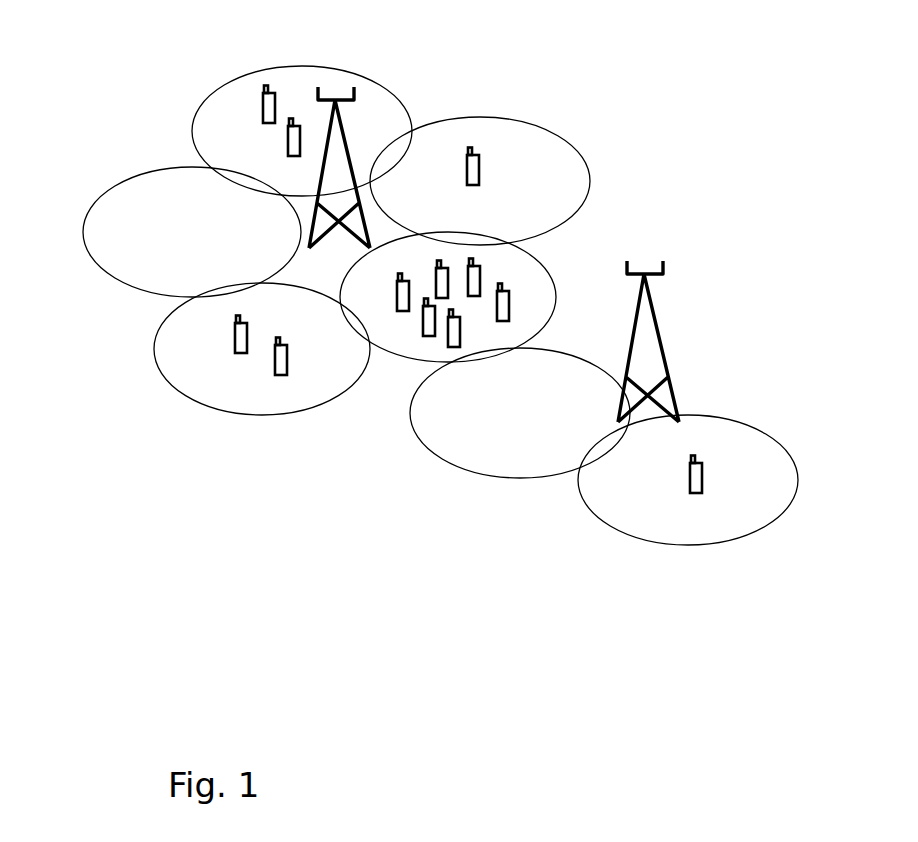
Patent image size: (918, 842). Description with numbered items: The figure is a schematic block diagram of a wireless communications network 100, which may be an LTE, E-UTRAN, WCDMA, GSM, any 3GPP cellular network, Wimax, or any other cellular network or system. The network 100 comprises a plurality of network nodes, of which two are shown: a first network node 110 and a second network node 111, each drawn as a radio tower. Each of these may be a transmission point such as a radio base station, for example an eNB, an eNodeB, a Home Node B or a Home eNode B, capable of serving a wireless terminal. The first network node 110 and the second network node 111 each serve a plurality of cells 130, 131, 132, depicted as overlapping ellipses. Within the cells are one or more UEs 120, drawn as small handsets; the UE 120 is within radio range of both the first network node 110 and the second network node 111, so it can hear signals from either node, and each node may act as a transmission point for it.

The wireless communications network 100 is at (573, 588).
The first network node 110 is at (358, 82).
The second network node 111 is at (665, 358).
The UE 120 is at (235, 342).
The cell 130 is at (403, 360).
The cell 131 is at (245, 80).
The cell 132 is at (140, 288).